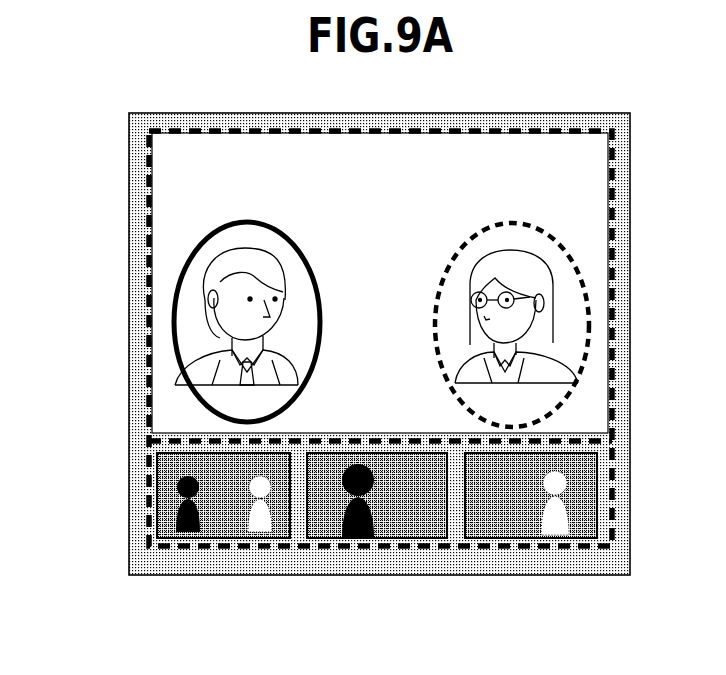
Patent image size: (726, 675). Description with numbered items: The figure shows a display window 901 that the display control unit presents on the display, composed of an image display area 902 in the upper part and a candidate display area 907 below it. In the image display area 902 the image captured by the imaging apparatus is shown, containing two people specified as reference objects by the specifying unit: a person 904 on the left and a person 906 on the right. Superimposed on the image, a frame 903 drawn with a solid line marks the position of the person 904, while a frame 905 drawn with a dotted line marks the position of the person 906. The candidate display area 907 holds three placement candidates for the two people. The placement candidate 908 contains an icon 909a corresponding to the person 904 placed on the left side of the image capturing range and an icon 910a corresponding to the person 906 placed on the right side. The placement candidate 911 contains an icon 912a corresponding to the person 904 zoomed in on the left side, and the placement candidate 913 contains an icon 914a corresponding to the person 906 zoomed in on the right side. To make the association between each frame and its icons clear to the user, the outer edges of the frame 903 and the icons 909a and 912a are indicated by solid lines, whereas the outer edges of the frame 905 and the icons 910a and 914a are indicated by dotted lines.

The display window 901 is at (555, 113).
The image display area 902 is at (614, 203).
The frame 903 is at (284, 232).
The person 904 is at (283, 280).
The frame 905 is at (518, 223).
The person 906 is at (545, 323).
The candidate display area 907 is at (614, 500).
The placement candidate 908 is at (157, 500).
The icon 909a is at (188, 540).
The icon 910a is at (260, 540).
The placement candidate 911 is at (430, 540).
The icon 912a is at (357, 540).
The placement candidate 913 is at (585, 540).
The icon 914a is at (555, 540).